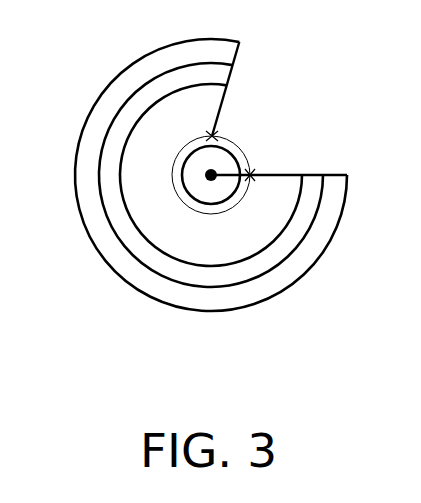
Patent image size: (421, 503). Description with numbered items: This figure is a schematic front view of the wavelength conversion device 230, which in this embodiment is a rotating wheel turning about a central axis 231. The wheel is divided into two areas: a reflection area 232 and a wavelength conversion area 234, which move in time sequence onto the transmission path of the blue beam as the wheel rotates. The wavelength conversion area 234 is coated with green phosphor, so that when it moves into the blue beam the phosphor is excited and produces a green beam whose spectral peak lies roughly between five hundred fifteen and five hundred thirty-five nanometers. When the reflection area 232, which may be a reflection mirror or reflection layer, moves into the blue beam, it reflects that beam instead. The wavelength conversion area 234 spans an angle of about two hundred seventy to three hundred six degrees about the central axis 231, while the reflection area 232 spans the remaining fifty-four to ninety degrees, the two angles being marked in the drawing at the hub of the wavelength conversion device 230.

The wavelength conversion device 230 is at (208, 177).
The central axis 231 is at (207, 175).
The reflection area 232 is at (267, 92).
The wavelength conversion area 234 is at (153, 92).